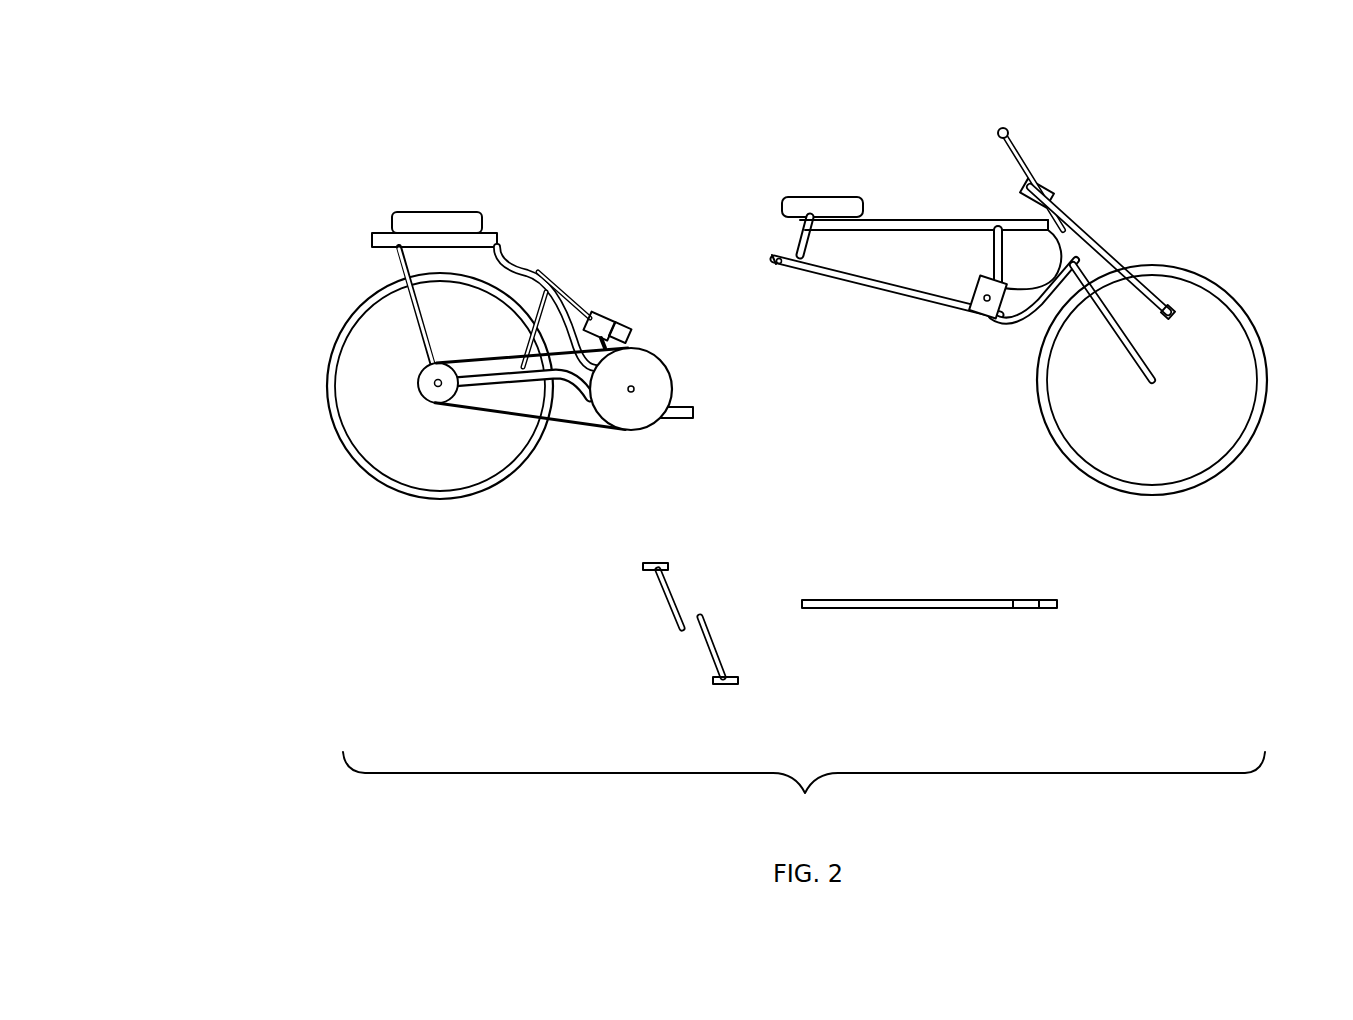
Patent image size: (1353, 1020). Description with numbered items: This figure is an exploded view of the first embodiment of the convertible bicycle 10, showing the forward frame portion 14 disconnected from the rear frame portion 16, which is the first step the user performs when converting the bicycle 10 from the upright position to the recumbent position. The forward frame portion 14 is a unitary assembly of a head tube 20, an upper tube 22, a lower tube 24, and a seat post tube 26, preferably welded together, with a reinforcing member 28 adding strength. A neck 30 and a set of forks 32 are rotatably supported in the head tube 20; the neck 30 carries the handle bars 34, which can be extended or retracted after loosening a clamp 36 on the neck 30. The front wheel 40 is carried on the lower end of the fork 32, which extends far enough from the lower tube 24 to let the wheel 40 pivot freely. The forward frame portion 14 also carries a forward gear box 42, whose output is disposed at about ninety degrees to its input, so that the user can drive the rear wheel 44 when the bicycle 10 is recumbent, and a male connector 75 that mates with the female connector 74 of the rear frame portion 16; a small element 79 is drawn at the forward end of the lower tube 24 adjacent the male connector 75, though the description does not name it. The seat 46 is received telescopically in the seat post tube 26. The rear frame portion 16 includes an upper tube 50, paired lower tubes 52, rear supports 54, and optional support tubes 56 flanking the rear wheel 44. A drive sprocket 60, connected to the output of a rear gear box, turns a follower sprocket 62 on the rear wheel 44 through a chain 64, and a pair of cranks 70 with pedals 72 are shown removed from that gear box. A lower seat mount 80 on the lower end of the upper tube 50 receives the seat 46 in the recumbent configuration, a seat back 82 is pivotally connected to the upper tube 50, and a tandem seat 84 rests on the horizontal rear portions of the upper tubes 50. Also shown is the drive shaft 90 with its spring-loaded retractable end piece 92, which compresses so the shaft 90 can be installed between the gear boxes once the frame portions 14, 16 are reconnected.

The bicycle 10 is at (292, 187).
The forward frame portion 14 is at (1063, 230).
The rear frame portion 16 is at (503, 257).
The head tube 20 is at (1070, 250).
The upper tube 22 is at (920, 223).
The lower tube 24 is at (905, 297).
The seat post tube 26 is at (800, 238).
The reinforcing member 28 is at (993, 255).
The neck 30 is at (1027, 180).
The forks 32 is at (1133, 337).
The handle bars 34 is at (1023, 150).
The clamp 36 is at (1047, 170).
The front wheel 40 is at (1262, 355).
The forward gear box 42 is at (983, 313).
The rear wheel 44 is at (330, 333).
The seat 46 is at (825, 203).
The upper tube 50 is at (540, 277).
The lower tubes 52 is at (500, 392).
The rear supports 54 is at (397, 259).
The support tubes 56 is at (428, 363).
The drive sprocket 60 is at (650, 377).
The follower sprocket 62 is at (428, 392).
The chain 64 is at (493, 420).
The cranks 70 is at (667, 590).
The pedals 72 is at (650, 568).
The female connector 74 is at (689, 420).
The male connector 75 is at (785, 267).
The pivot pin 79 is at (778, 260).
The lower seat mount 80 is at (614, 328).
The seat back 82 is at (597, 318).
The tandem seat 84 is at (440, 220).
The drive shaft 90 is at (920, 606).
The retractable end piece 92 is at (1025, 607).